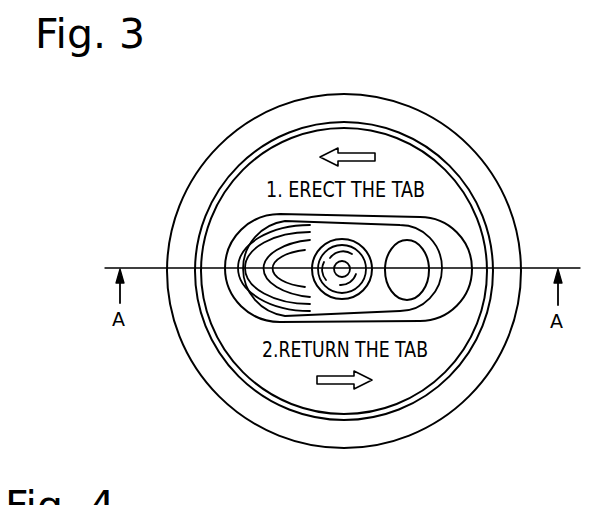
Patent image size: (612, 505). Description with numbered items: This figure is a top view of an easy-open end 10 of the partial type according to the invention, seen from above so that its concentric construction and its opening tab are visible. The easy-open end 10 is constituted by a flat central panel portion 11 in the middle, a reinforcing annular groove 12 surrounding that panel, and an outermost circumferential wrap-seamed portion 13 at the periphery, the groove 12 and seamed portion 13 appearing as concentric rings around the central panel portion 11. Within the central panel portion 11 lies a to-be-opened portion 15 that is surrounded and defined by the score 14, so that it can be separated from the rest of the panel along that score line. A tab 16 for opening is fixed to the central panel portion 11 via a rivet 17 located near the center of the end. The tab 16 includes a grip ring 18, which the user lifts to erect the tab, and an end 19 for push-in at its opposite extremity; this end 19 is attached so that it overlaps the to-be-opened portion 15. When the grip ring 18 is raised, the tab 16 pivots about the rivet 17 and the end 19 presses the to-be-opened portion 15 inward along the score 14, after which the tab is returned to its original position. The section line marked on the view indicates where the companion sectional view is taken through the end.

The easy-open end 10 is at (492, 125).
The central panel portion 11 is at (295, 150).
The reinforcing annular groove 12 is at (233, 170).
The outermost circumferential wrap-seamed portion 13 is at (187, 180).
The score 14 is at (245, 298).
The to-be-opened portion 15 is at (276, 278).
The tab 16 is at (377, 300).
The rivet 17 is at (382, 242).
The grip ring 18 is at (420, 300).
The end for push-in 19 is at (233, 240).